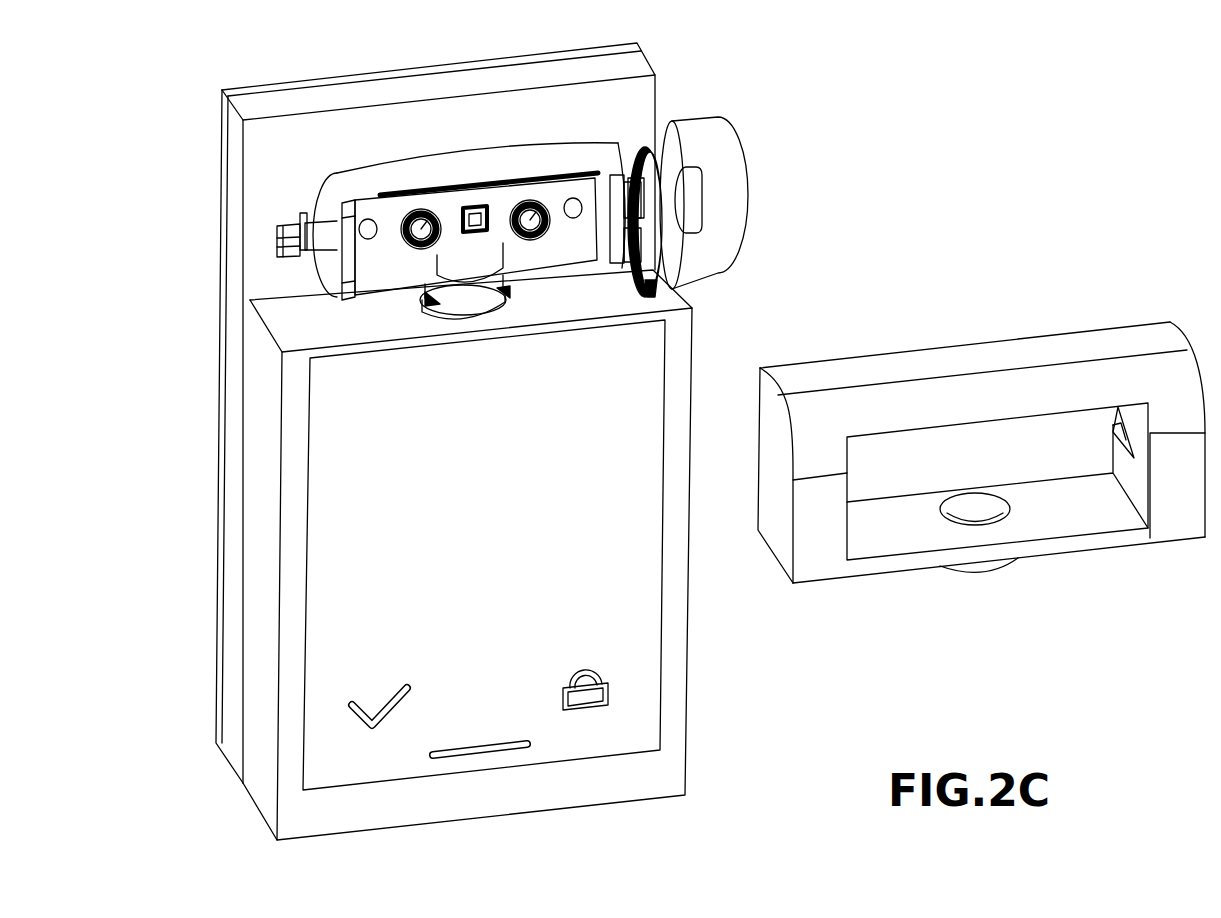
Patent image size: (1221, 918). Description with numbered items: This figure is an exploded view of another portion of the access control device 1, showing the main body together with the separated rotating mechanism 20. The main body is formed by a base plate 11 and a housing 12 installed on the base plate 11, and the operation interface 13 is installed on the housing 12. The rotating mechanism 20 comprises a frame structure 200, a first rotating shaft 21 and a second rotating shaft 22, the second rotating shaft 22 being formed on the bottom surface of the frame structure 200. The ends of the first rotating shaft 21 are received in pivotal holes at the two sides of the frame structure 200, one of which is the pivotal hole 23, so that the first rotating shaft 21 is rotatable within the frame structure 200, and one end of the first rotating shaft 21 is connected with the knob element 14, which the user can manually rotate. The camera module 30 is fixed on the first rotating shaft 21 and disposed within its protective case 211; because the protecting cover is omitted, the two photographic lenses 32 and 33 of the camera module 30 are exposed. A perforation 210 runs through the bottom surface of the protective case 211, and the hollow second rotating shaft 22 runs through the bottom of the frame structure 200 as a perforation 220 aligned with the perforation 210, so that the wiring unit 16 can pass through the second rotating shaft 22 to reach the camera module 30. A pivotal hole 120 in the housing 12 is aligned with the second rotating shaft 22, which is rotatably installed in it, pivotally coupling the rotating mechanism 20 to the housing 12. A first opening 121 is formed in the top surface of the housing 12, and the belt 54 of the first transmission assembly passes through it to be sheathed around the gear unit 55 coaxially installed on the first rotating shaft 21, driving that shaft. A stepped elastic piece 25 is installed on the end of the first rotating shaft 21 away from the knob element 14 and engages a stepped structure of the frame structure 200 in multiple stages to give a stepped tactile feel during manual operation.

The access control device 1 is at (1052, 122).
The base plate 11 is at (232, 522).
The housing 12 is at (548, 790).
The operation interface 13 is at (642, 612).
The knob element 14 is at (732, 217).
The wiring unit 16 is at (483, 297).
The rotating mechanism 20 is at (853, 370).
The first rotating shaft 21 is at (325, 238).
The second rotating shaft 22 is at (988, 567).
The pivotal hole 23 is at (1113, 432).
The stepped elastic piece 25 is at (303, 210).
The camera module 30 is at (477, 205).
The photographic lens 32 is at (537, 203).
The photographic lens 33 is at (417, 220).
The belt 54 is at (676, 187).
The gear unit 55 is at (665, 160).
The pivotal hole 120 is at (495, 297).
The first opening 121 is at (660, 290).
The frame structure 200 is at (1000, 393).
The perforation 210 is at (432, 268).
The protective case 211 is at (525, 160).
The perforation 220 is at (970, 502).